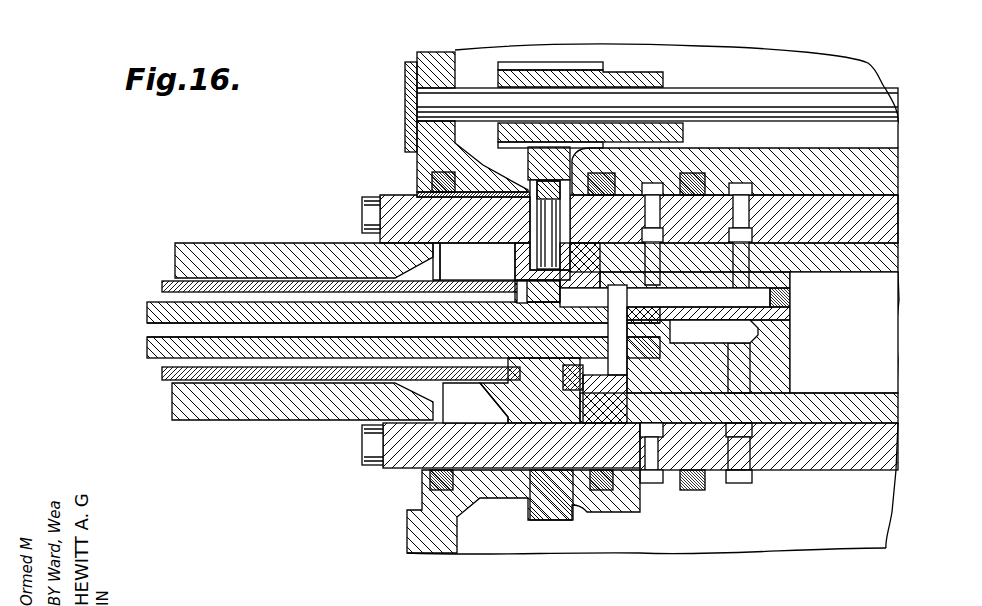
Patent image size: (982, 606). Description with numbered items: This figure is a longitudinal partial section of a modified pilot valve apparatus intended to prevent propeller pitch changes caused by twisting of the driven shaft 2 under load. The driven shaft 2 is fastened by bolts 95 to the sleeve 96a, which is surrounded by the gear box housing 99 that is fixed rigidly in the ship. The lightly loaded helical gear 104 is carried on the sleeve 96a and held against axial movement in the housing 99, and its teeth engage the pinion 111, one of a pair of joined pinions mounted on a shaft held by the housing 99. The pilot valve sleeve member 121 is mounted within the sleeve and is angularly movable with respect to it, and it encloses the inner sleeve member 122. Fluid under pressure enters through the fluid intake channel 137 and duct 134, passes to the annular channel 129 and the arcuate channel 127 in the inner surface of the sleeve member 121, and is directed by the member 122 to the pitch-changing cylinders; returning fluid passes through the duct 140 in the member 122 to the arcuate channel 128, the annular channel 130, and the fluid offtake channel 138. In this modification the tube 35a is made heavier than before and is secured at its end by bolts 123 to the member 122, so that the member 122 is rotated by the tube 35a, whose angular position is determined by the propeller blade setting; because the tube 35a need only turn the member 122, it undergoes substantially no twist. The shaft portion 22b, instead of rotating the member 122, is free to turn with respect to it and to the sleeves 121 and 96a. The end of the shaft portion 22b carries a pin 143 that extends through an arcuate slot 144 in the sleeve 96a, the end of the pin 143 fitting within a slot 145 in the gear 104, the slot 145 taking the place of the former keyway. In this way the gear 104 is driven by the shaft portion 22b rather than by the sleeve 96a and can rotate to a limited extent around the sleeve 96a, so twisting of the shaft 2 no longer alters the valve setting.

The driven shaft 2 is at (258, 243).
The shaft portion 22b is at (448, 381).
The tube 35a is at (147, 326).
The bolts 95 is at (363, 212).
The sleeve 96a is at (890, 220).
The gear box housing 99 is at (408, 510).
The helical gear 104 is at (537, 150).
The pinion 111 is at (540, 85).
The pilot valve sleeve member 121 is at (823, 276).
The sleeve member 122 is at (782, 358).
The bolts 123 is at (527, 295).
The arcuate channel 127 is at (665, 297).
The arcuate channel 128 is at (788, 392).
The annular channel 129 is at (652, 236).
The annular channel 130 is at (738, 262).
The duct 134 is at (655, 282).
The fluid intake channel 137 is at (652, 190).
The fluid offtake channel 138 is at (742, 190).
The duct 140 is at (758, 331).
The pin 143 is at (548, 255).
The arcuate slot 144 is at (545, 232).
The slot 145 is at (535, 170).